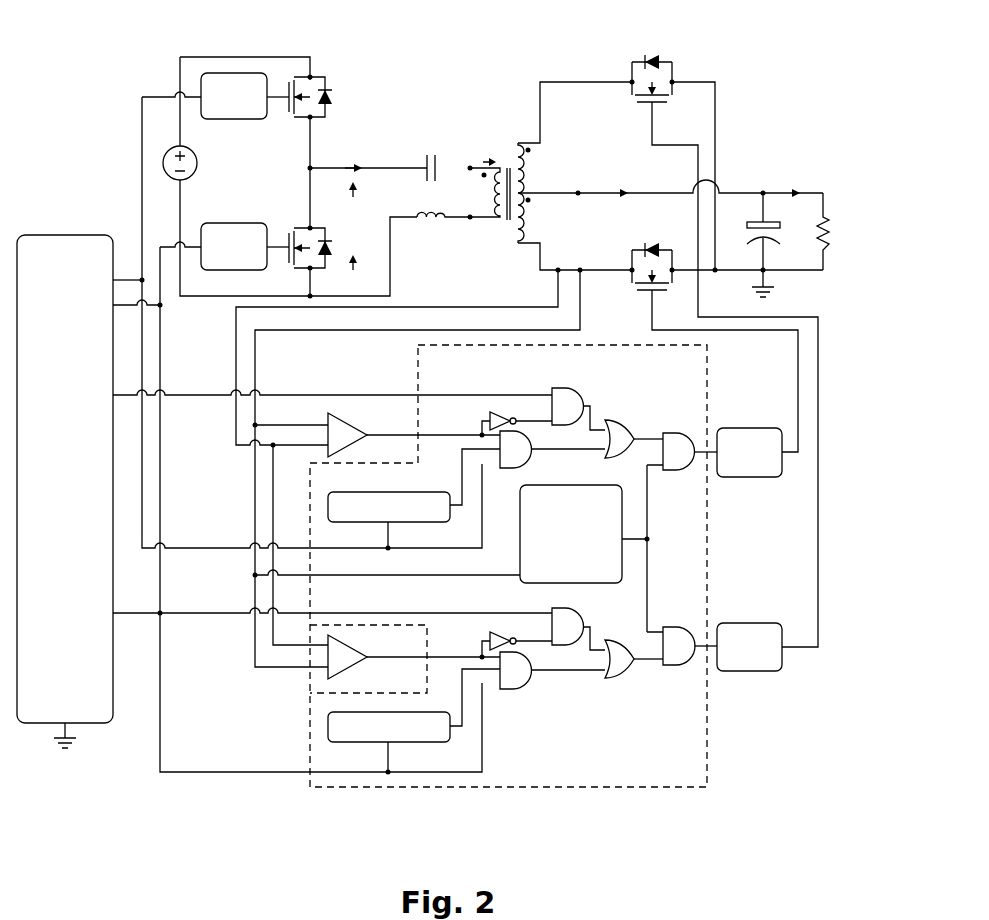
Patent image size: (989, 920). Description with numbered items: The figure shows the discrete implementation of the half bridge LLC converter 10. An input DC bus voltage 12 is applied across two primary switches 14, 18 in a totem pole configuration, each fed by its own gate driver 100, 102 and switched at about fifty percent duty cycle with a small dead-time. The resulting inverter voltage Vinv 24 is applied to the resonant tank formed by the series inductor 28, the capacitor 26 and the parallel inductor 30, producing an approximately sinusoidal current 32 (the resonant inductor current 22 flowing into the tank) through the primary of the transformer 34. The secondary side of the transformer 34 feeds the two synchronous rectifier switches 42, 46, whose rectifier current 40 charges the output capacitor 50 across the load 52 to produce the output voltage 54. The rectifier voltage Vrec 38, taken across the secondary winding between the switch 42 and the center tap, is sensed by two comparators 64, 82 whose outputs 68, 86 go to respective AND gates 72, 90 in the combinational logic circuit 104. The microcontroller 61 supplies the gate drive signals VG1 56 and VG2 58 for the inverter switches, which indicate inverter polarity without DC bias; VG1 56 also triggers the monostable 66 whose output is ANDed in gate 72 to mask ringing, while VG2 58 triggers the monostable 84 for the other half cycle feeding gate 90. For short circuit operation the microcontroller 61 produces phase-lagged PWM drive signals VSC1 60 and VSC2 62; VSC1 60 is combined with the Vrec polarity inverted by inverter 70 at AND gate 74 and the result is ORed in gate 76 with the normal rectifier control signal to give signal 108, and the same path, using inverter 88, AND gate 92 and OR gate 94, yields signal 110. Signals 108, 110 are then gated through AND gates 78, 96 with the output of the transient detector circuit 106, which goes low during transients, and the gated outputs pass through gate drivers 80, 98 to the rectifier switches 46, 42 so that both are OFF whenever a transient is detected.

The half bridge LLC converter 10 is at (459, 40).
The input DC bus voltage 12 is at (193, 163).
The first primary switch 14 is at (310, 88).
The second primary switch 18 is at (310, 239).
The resonant inductor current 22 is at (373, 133).
The inverter voltage Vinv 24 is at (374, 248).
The resonant capacitor 26 is at (429, 160).
The series inductor 28 is at (443, 227).
The parallel inductor 30 is at (470, 193).
The sinusoidal current 32 is at (484, 130).
The transformer 34 is at (500, 240).
The rectifier voltage Vrec 38 is at (564, 196).
The rectifier output current 40 is at (620, 180).
The second synchronous rectifier switch 42 is at (713, 351).
The first synchronous rectifier switch 46 is at (703, 347).
The output capacitor 50 is at (760, 245).
The load resistor 52 is at (826, 231).
The output voltage 54 is at (852, 205).
The gate drive signal VG1 56 is at (99, 282).
The gate drive signal VG2 58 is at (108, 307).
The PWM drive signal VSC1 60 is at (301, 396).
The microcontroller 61 is at (56, 491).
The PWM drive signal VSC2 62 is at (301, 614).
The first comparator 64 is at (352, 421).
The first monostable multivibrator 66 is at (389, 510).
The comparator output signal 68 is at (462, 457).
The inverter 70 is at (497, 413).
The first AND gate 72 is at (520, 465).
The short-circuit AND gate 74 is at (563, 388).
The OR gate 76 is at (611, 421).
The transient-gating AND gate 78 is at (673, 433).
The gate driver 80 is at (740, 428).
The second comparator 82 is at (352, 643).
The second monostable multivibrator 84 is at (389, 732).
The comparator output signal 86 is at (462, 678).
The second inverter 88 is at (497, 633).
The second AND gate 90 is at (518, 685).
The fifth AND gate 92 is at (565, 608).
The second OR gate 94 is at (612, 641).
The transient-gating AND gate 96 is at (673, 628).
The second rectifier gate driver 98 is at (740, 623).
The first primary gate driver 100 is at (240, 119).
The second primary gate driver 102 is at (240, 223).
The combinational logic circuit 104 is at (508, 578).
The transient detector circuit 106 is at (591, 548).
The control signal 108 is at (648, 439).
The control signal 110 is at (640, 660).